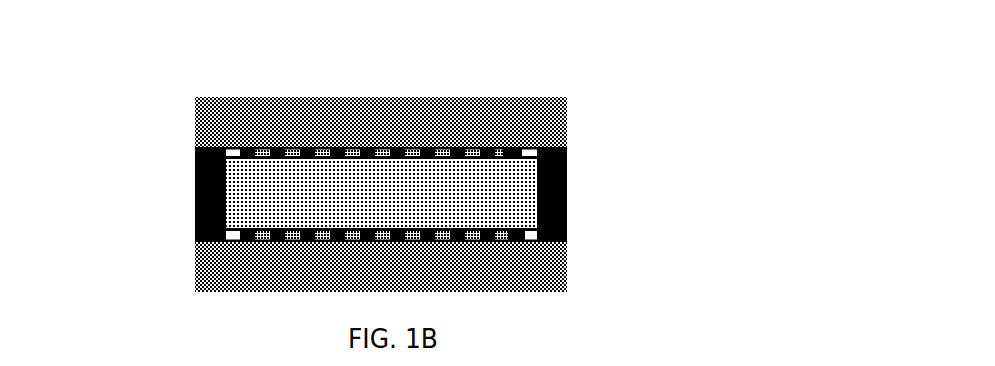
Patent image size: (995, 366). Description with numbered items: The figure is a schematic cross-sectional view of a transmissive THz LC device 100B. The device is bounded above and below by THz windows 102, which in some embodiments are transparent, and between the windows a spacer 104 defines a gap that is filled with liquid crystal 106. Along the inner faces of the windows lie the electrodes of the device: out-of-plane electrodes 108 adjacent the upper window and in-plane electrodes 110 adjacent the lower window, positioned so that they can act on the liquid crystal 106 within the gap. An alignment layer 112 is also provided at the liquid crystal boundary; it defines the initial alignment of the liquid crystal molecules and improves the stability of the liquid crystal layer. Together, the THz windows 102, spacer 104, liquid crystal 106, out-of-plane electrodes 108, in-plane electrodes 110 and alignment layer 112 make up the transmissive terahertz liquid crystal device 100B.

The transmissive THz LC device 100B is at (472, 82).
The THz window 102 is at (221, 120).
The spacer 104 is at (545, 212).
The liquid crystal 106 is at (272, 194).
The out-of-plane electrode 108 is at (502, 152).
The in-plane electrode 110 is at (537, 243).
The alignment layer 112 is at (515, 161).